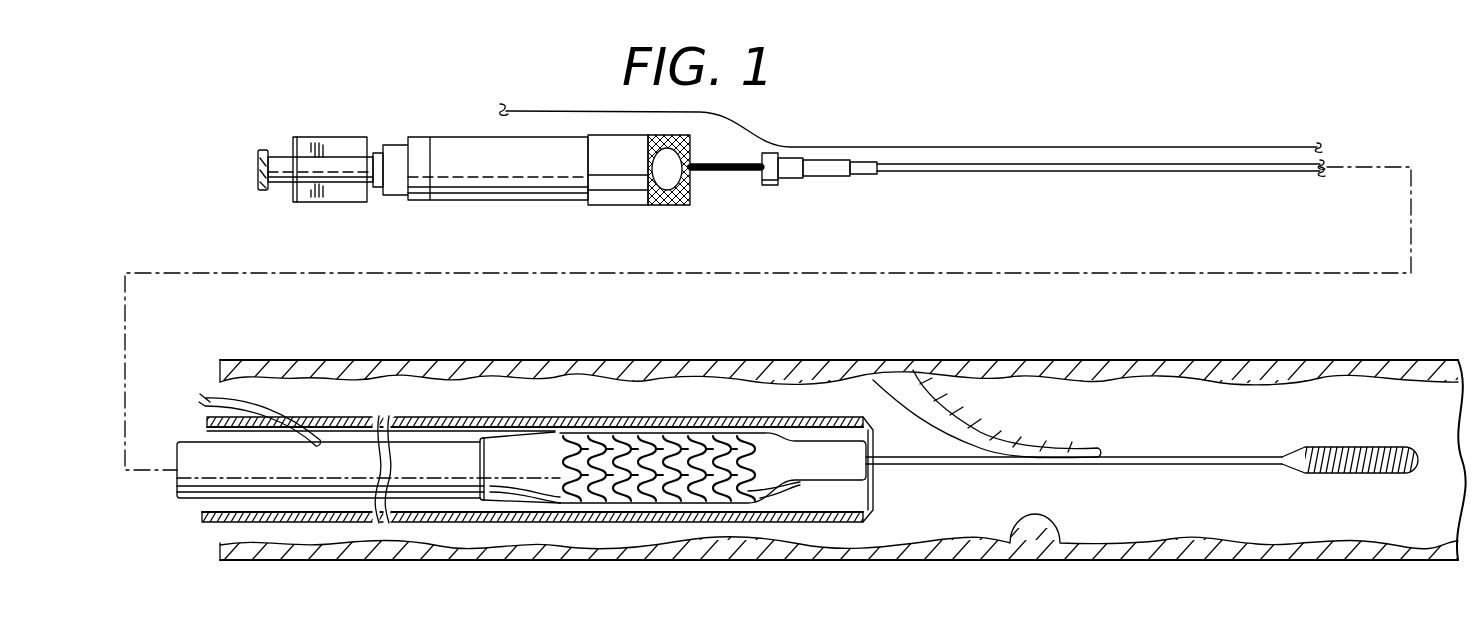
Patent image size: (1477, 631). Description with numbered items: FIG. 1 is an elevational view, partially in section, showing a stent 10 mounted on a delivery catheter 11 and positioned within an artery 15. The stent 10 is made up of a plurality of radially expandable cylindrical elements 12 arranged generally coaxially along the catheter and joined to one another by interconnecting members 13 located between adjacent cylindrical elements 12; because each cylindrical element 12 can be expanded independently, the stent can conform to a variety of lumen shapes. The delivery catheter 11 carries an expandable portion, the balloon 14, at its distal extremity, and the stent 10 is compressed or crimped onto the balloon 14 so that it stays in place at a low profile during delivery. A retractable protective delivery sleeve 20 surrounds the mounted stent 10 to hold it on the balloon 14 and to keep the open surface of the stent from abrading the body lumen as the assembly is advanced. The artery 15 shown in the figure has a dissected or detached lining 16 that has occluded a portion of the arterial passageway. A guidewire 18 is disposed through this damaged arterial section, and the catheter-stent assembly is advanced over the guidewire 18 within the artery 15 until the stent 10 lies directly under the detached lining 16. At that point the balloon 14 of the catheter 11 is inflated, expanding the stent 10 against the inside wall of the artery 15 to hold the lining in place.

The stent 10 is at (615, 407).
The delivery catheter 11 is at (1033, 175).
The radially expandable cylindrical elements 12 is at (705, 433).
The interconnecting members 13 is at (603, 443).
The balloon 14 is at (497, 478).
The artery 15 is at (1010, 528).
The dissected or detached lining 16 is at (952, 439).
The guidewire 18 is at (1218, 460).
The retractable protective delivery sleeve 20 is at (538, 523).